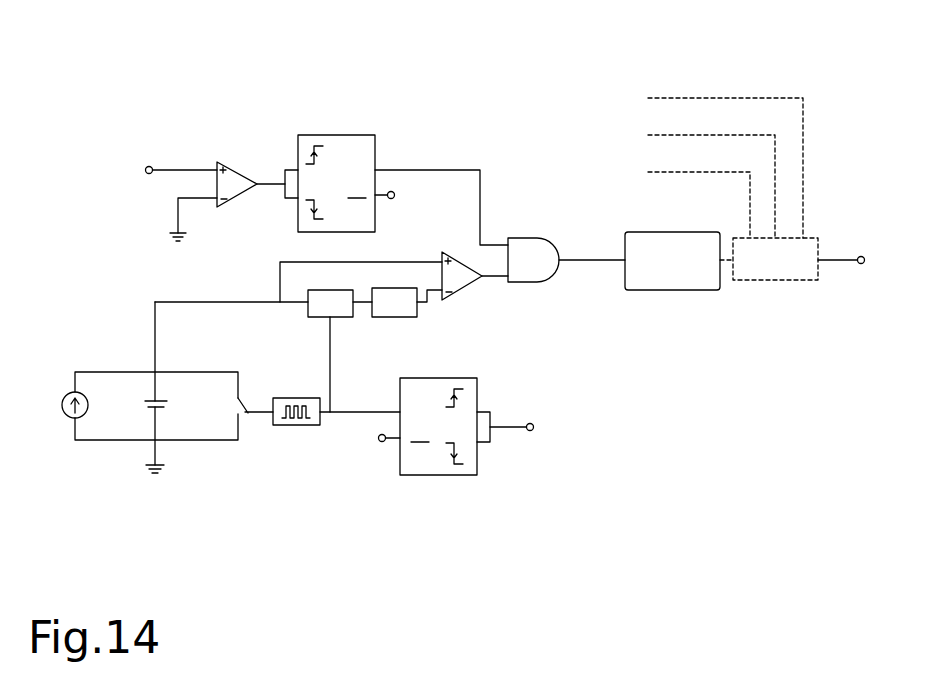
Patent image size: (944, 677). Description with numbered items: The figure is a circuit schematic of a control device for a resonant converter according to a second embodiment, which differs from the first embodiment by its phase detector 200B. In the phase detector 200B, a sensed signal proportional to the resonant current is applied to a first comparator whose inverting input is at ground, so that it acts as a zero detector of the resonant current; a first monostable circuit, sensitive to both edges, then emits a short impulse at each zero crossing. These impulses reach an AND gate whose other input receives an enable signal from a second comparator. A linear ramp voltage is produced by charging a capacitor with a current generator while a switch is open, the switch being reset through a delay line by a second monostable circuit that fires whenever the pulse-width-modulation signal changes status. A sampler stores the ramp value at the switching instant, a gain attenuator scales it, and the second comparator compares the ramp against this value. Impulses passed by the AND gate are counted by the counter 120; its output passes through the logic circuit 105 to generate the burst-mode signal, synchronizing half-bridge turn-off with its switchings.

The phase detector 200B is at (290, 77).
The counter 120 is at (650, 232).
The logic circuit 105 is at (762, 281).